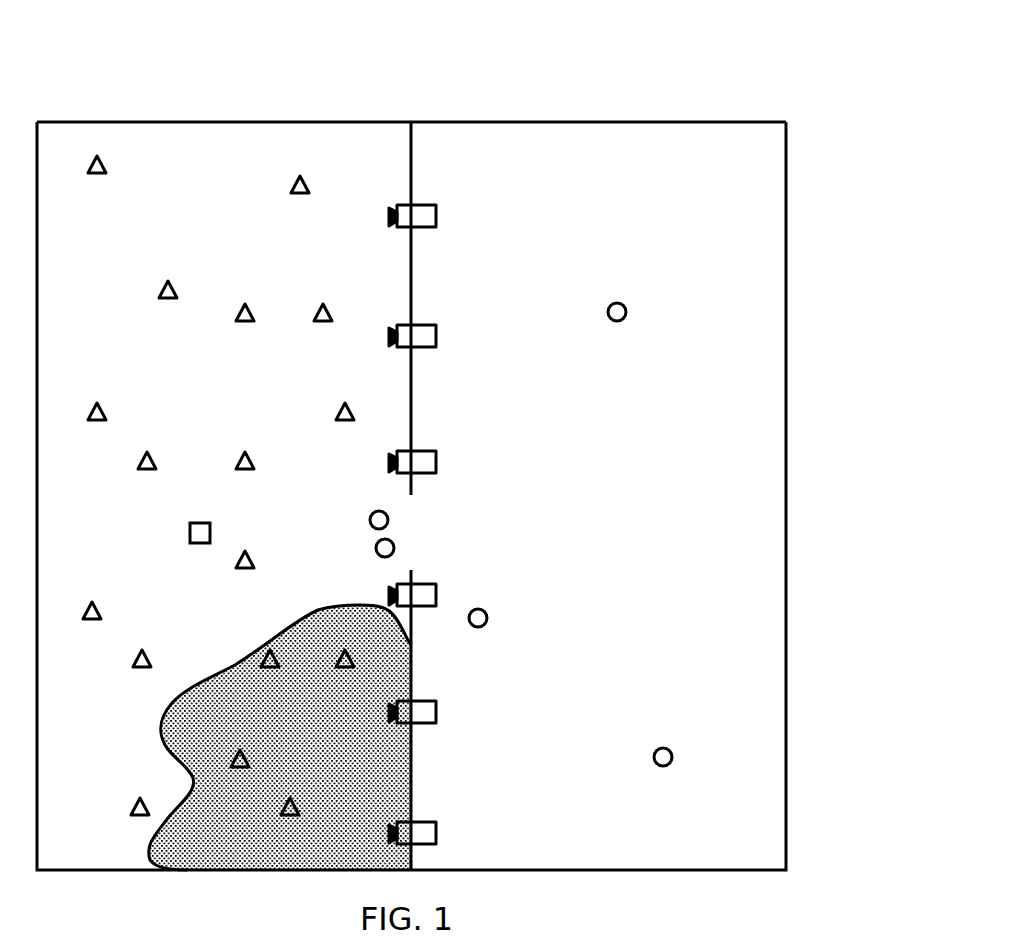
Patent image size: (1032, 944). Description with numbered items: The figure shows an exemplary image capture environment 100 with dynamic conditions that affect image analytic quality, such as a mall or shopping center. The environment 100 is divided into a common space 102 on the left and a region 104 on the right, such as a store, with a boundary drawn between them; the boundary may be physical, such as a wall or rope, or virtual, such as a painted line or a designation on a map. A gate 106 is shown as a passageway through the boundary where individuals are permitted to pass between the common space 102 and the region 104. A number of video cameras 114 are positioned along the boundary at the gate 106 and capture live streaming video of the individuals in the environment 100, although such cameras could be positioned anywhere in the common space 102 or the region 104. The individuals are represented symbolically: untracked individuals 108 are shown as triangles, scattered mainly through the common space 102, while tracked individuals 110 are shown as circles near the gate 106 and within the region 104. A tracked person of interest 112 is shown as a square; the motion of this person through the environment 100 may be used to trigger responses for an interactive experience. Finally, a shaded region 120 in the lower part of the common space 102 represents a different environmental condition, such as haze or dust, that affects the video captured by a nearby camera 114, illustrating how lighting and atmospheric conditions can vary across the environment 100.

The environment 100 is at (786, 157).
The common space 102 is at (222, 122).
The region 104 is at (597, 122).
The gate 106 is at (411, 503).
The untracked individuals 108 is at (291, 190).
The tracked individuals 110 is at (608, 312).
The tracked person of interest 112 is at (190, 534).
The video cameras 114 is at (437, 450).
The region 120 is at (173, 760).